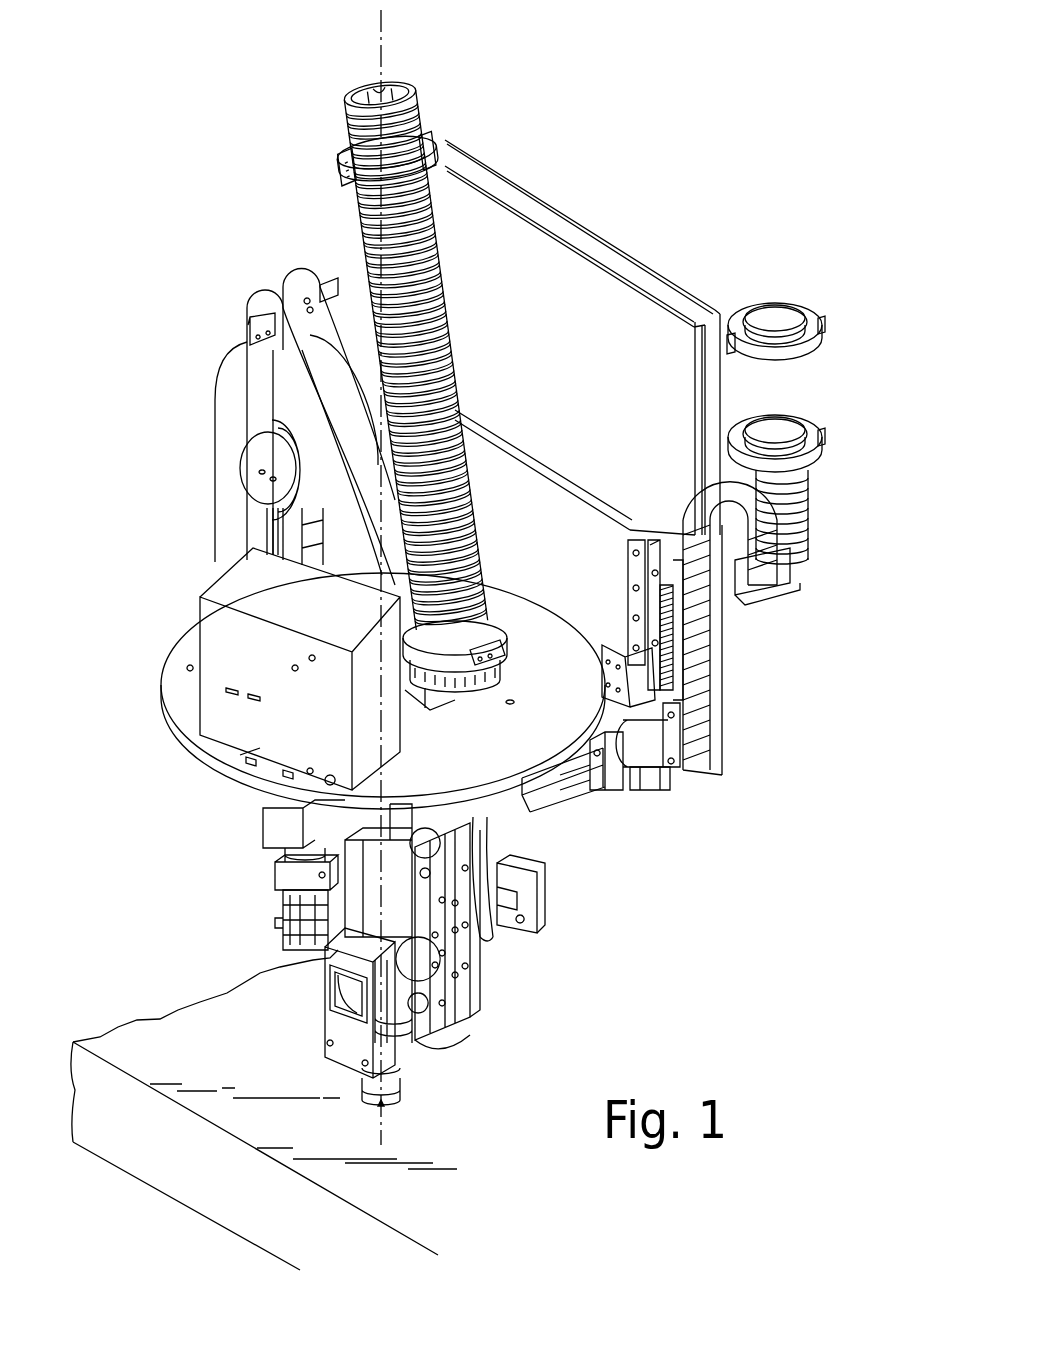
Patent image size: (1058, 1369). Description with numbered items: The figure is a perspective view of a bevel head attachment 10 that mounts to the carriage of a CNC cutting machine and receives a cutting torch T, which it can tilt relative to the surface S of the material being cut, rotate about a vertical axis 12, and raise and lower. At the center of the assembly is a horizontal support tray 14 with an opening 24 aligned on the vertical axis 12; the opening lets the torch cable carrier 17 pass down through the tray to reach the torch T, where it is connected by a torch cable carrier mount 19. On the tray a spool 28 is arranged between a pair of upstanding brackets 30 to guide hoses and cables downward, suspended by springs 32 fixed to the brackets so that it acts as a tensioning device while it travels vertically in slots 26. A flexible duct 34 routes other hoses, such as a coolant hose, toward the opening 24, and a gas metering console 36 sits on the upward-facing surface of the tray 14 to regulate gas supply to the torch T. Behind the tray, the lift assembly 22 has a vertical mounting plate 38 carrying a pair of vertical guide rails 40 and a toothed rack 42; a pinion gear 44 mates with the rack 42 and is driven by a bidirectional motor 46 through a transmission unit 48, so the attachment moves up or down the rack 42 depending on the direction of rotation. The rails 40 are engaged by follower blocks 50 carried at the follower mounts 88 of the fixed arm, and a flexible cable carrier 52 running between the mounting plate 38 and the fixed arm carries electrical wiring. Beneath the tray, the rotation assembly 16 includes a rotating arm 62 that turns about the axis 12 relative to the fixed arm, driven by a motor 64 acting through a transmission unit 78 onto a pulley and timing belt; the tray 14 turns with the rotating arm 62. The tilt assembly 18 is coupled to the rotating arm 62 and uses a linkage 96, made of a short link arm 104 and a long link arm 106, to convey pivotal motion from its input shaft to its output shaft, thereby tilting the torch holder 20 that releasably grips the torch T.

The bevel head attachment 10 is at (736, 192).
The vertical axis 12 is at (381, 30).
The horizontal support tray 14 is at (449, 770).
The rotation assembly 16 is at (238, 826).
The torch cable carrier 17 is at (355, 930).
The tilt assembly 18 is at (556, 893).
The torch cable carrier mount 19 is at (328, 1020).
The torch holder 20 is at (395, 1062).
The lift assembly 22 is at (596, 556).
The opening 24 is at (432, 692).
The slots 26 is at (270, 522).
The spool 28 is at (245, 458).
The upstanding brackets 30 is at (300, 300).
The springs 32 is at (258, 375).
The flexible duct 34 is at (440, 340).
The gas metering console 36 is at (220, 592).
The mounting plate 38 is at (512, 455).
The vertical guide rails 40 is at (633, 570).
The toothed rack 42 is at (683, 662).
The pinion gear 44 is at (673, 680).
The bidirectional motor 46 is at (568, 797).
The transmission unit 48 is at (650, 778).
The follower blocks 50 is at (650, 600).
The flexible cable carrier 52 is at (722, 705).
The rotating arm 62 is at (280, 830).
The motor 64 is at (285, 927).
The transmission unit 78 is at (295, 865).
The follower mount 88 is at (612, 652).
The linkage 96 is at (497, 975).
The short link arm 104 is at (480, 953).
The long link arm 106 is at (470, 1010).
The surface S is at (196, 1025).
The cutting torch T is at (392, 1100).